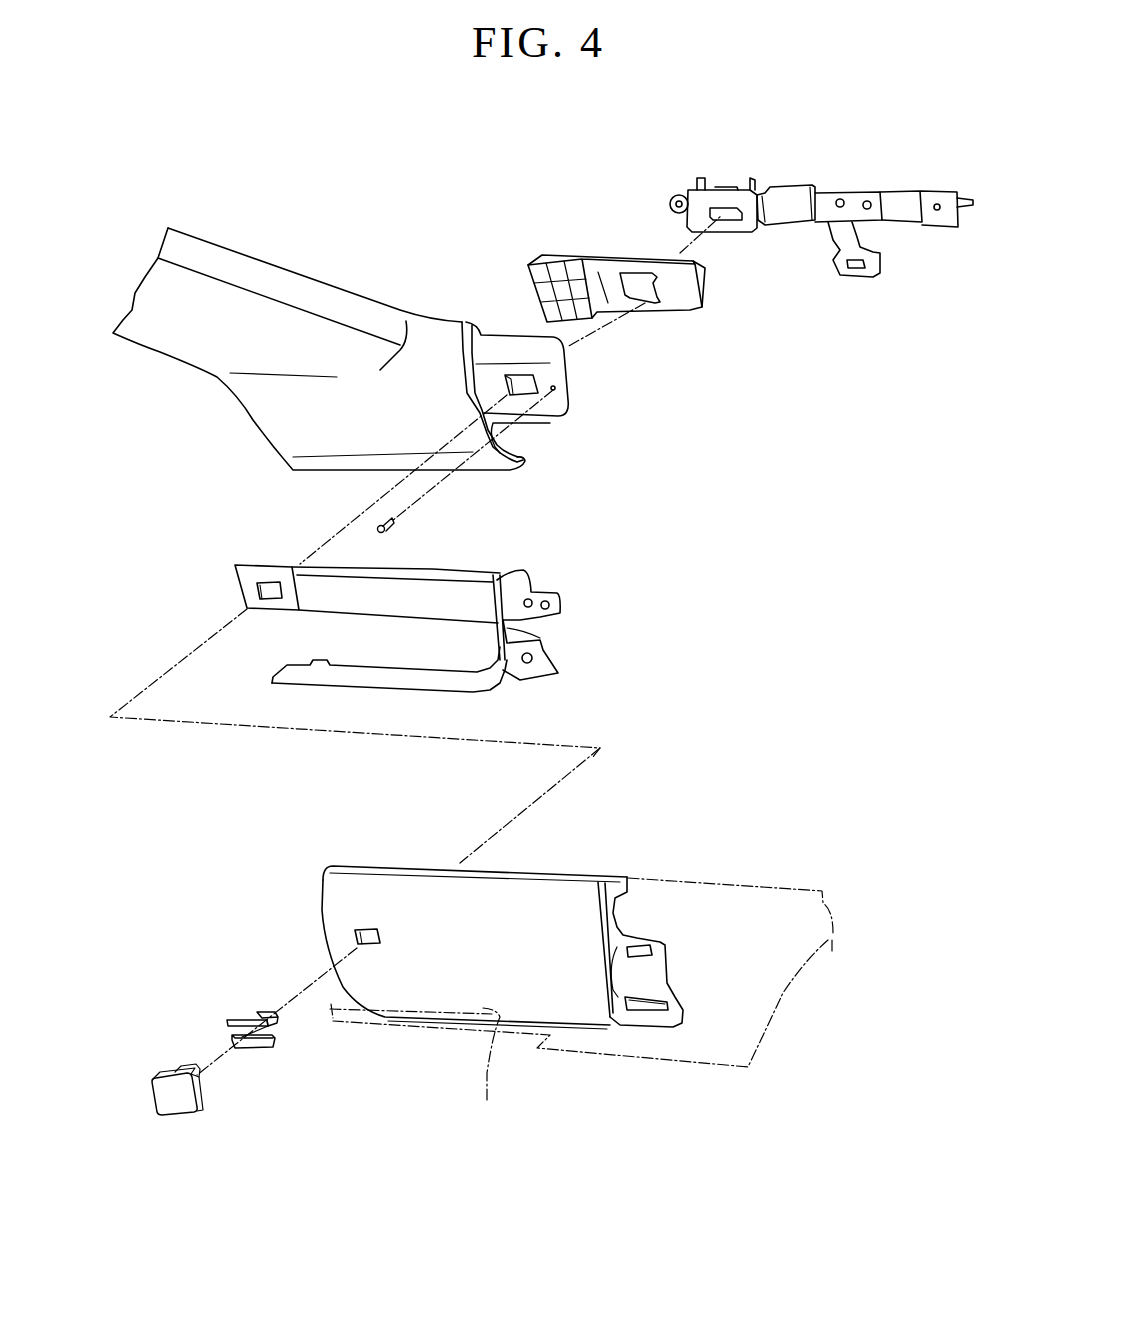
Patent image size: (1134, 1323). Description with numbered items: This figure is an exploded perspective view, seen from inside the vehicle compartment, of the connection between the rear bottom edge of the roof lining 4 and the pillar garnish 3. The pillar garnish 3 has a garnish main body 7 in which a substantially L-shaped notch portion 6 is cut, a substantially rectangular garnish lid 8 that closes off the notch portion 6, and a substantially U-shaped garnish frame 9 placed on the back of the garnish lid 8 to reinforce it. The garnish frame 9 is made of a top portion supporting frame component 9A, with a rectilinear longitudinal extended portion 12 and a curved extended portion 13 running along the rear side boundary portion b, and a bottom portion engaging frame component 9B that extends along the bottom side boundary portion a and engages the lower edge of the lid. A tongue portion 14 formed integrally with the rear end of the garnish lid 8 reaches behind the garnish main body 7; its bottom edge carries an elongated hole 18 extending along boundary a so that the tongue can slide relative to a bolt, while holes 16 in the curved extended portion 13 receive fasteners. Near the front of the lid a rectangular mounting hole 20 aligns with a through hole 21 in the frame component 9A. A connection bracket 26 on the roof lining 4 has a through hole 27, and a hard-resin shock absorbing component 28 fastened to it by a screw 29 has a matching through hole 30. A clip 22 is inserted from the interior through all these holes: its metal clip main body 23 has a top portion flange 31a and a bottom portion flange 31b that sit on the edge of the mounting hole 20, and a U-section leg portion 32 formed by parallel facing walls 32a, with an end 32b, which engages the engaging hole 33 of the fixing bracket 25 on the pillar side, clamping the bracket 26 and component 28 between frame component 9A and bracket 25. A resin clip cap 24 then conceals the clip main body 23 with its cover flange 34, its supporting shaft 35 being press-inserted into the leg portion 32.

The pillar garnish 3 is at (502, 975).
The roof lining 4 is at (322, 284).
The notch portion 6 is at (488, 1107).
The garnish main body 7 is at (690, 1063).
The garnish lid 8 is at (562, 1018).
The garnish frame 9 is at (408, 607).
The top portion supporting frame component 9A is at (450, 575).
The bottom portion engaging frame component 9B is at (477, 688).
The longitudinal extended portion 12 is at (300, 566).
The curved extended portion 13 is at (520, 632).
The tongue portion 14 is at (650, 978).
The bolt holes 16 is at (557, 607).
The elongated hole 18 is at (657, 1013).
The mounting hole 20 is at (353, 940).
The through hole 21 is at (258, 595).
The clip 22 is at (258, 1089).
The clip main body 23 is at (224, 1068).
The clip cap 24 is at (266, 1110).
The fixing bracket 25 is at (820, 185).
The connection bracket 26 is at (553, 423).
The through hole 27 is at (540, 381).
The shock absorbing component 28 is at (688, 308).
The screw 29 is at (393, 523).
The through hole 30 is at (620, 275).
The top portion flange 31a is at (230, 1020).
The bottom portion flange 31b is at (262, 1050).
The leg portion 32 is at (275, 1025).
The facing walls 32a is at (260, 1013).
The lower projection 32b is at (262, 1050).
The engaging hole 33 is at (730, 213).
The cover flange 34 is at (152, 1079).
The supporting shaft 35 is at (185, 1068).
The bottom side boundary portion a is at (417, 1013).
The rear portion side boundary portion b is at (612, 898).